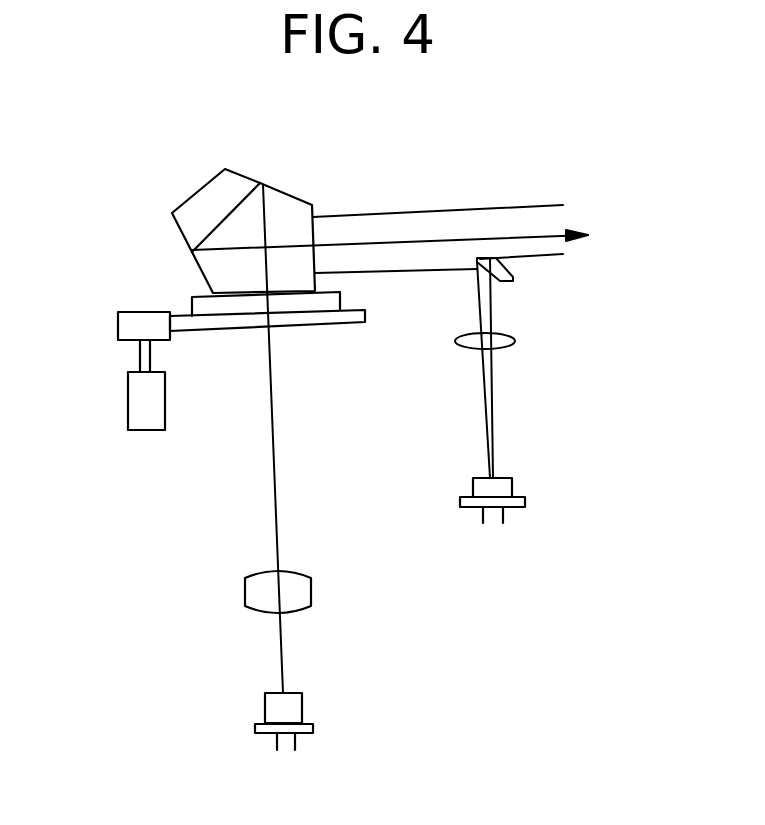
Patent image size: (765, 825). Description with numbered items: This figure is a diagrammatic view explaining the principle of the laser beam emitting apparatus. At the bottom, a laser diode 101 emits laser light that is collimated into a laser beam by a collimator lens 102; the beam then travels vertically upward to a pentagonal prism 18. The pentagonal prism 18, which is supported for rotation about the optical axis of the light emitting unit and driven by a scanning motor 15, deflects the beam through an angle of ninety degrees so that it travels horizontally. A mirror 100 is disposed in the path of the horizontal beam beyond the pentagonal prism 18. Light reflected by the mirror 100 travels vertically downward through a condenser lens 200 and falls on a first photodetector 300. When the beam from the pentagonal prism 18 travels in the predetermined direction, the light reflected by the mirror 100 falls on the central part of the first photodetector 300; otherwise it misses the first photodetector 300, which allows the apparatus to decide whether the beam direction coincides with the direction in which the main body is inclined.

The pentagonal prism 18 is at (298, 193).
The scanning motor 15 is at (128, 400).
The mirror 100 is at (512, 280).
The condenser lens 200 is at (515, 342).
The first photodetector 300 is at (512, 486).
The collimator lens 102 is at (245, 588).
The laser diode 101 is at (265, 709).